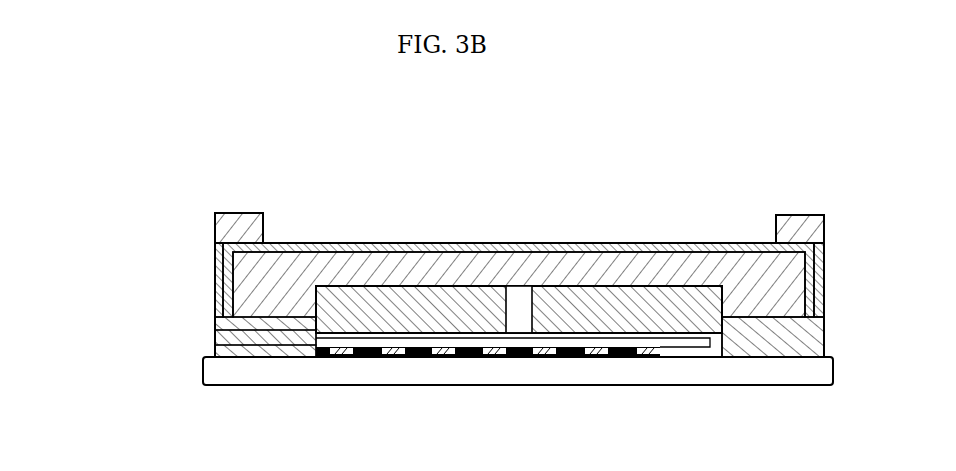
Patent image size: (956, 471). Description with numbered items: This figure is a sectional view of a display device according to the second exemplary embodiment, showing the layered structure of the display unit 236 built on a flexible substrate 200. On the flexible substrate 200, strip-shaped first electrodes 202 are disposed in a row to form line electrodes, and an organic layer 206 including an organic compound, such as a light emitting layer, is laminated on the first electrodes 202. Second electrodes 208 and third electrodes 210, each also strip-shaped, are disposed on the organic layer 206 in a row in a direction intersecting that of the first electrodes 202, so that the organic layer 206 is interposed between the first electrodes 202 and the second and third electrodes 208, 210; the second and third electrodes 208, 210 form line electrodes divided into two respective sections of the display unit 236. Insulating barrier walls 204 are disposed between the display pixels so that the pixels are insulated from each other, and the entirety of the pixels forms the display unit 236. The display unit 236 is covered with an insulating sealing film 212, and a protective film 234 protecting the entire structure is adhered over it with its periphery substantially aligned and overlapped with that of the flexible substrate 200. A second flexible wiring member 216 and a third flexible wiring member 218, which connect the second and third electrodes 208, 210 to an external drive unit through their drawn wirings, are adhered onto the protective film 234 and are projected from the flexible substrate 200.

The flexible substrate 200 is at (228, 376).
The first electrodes 202 is at (300, 353).
The insulating barrier walls 204 is at (285, 343).
The organic layer 206 is at (275, 324).
The second electrodes 208 is at (505, 293).
The third electrodes 210 is at (352, 307).
The insulating sealing film 212 is at (436, 266).
The second flexible wiring member 216 is at (840, 205).
The third flexible wiring member 218 is at (256, 231).
The protective film 234 is at (565, 243).
The display unit 236 is at (112, 220).